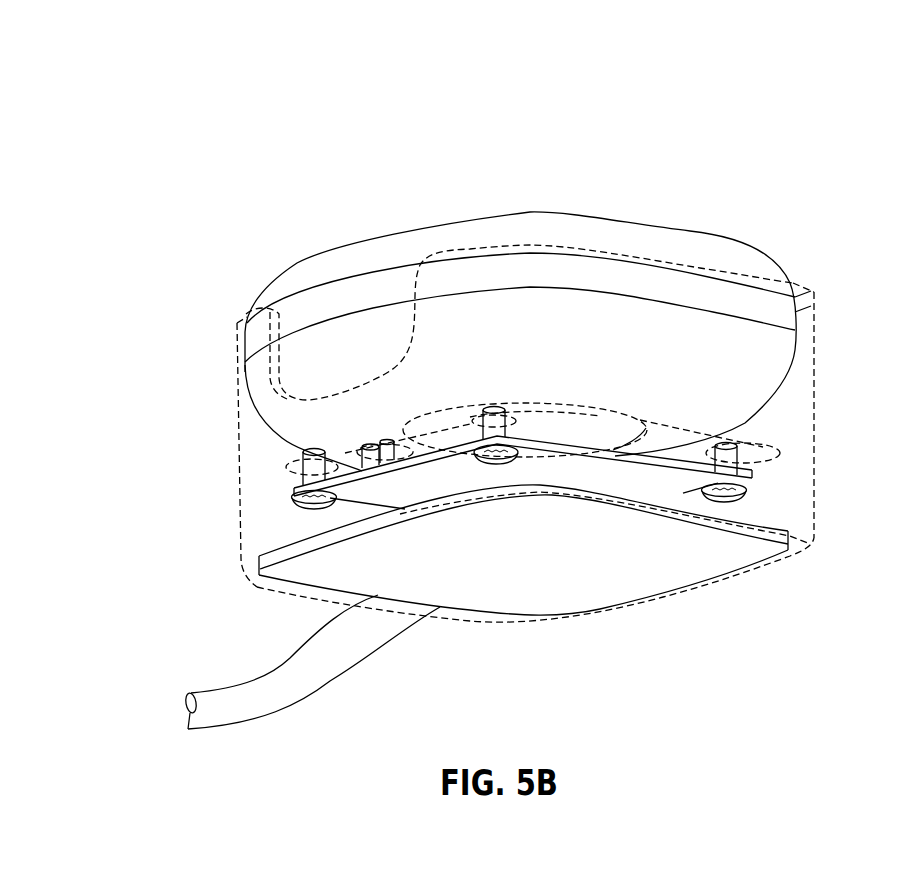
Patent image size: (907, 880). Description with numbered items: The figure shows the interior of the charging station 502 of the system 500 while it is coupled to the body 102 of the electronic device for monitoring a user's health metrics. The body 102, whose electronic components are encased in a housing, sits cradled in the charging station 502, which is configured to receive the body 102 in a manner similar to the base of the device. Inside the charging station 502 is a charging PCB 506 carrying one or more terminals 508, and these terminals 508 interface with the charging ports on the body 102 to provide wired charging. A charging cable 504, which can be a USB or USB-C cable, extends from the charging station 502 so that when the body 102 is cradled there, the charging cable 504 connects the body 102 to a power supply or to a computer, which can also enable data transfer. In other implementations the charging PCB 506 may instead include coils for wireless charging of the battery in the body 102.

The system 500 is at (185, 67).
The body 102 is at (310, 263).
The charging station 502 is at (228, 412).
The charging cable 504 is at (203, 670).
The charging PCB 506 is at (688, 514).
The terminals 508 is at (362, 452).